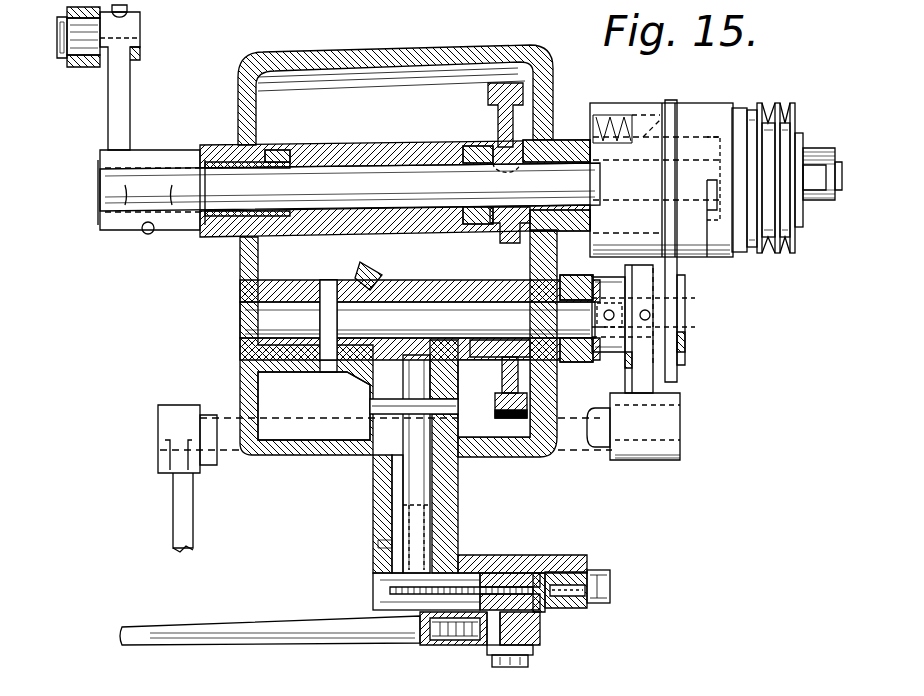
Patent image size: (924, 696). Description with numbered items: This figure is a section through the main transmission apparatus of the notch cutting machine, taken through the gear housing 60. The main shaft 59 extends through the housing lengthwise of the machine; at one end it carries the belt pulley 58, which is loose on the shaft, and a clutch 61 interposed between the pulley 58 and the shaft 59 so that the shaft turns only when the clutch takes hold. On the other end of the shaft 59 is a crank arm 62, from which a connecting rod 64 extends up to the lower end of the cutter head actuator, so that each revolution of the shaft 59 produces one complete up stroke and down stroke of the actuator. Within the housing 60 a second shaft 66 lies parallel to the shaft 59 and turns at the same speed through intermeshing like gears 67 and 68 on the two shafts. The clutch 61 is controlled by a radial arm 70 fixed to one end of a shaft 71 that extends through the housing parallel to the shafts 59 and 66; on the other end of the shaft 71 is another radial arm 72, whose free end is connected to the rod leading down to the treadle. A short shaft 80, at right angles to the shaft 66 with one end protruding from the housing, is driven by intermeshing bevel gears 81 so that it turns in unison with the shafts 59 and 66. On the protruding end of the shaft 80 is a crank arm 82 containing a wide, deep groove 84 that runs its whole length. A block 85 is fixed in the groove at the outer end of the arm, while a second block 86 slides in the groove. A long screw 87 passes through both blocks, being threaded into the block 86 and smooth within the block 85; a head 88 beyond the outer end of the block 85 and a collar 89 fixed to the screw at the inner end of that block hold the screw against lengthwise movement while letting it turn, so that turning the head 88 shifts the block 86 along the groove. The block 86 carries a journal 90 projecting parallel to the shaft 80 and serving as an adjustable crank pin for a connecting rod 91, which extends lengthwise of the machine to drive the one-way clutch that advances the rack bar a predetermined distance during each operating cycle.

The pulley 58 is at (240, 268).
The shaft 59 is at (395, 166).
The gear housing 60 is at (552, 90).
The clutch 61 is at (678, 103).
The crank arm 62 is at (124, 106).
The connecting rod 64 is at (82, 70).
The shaft 66 is at (421, 310).
The gear 67 is at (500, 368).
The gear 68 is at (486, 95).
The radial arm 70 is at (678, 366).
The shaft 71 is at (210, 458).
The radial arm 72 is at (190, 528).
The short shaft 80 is at (440, 483).
The bevel gears 81 is at (350, 385).
The crank arm 82 is at (497, 550).
The groove 84 is at (376, 585).
The block 85 is at (570, 604).
The block 86 is at (543, 568).
The screw 87 is at (380, 599).
The head 88 is at (618, 564).
The collar 89 is at (545, 612).
The journal 90 is at (500, 667).
The connecting rod 91 is at (288, 642).